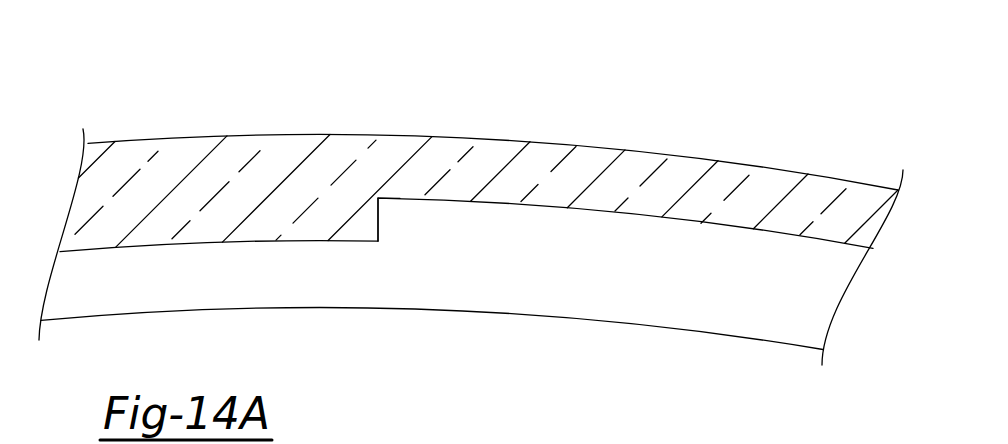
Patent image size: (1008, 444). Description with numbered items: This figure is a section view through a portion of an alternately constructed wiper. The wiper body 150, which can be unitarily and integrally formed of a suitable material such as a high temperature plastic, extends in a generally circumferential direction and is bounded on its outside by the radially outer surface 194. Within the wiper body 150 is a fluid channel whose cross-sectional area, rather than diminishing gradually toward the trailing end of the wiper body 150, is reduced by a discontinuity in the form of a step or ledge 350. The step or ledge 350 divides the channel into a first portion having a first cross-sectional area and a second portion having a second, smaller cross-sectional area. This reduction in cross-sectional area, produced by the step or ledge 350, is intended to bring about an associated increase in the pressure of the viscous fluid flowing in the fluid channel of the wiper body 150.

The wiper body 150 is at (172, 142).
The radially outer surface 194 is at (540, 141).
The step or ledge 350 is at (357, 230).